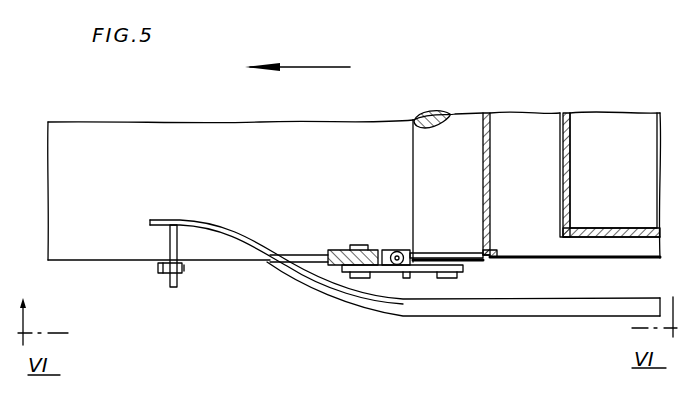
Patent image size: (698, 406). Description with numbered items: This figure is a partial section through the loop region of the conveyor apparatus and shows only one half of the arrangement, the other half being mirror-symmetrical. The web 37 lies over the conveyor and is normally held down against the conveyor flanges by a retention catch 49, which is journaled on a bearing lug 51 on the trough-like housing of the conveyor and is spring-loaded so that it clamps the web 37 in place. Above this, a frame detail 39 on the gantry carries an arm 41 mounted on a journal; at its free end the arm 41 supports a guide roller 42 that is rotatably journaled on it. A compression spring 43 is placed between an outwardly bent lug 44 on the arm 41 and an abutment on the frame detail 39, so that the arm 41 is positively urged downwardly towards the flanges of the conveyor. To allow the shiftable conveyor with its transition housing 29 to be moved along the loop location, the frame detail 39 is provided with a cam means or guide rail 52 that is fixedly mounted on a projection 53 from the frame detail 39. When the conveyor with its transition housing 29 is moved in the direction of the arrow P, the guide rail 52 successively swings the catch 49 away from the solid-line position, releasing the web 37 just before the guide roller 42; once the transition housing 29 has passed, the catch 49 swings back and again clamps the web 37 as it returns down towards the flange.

The transition housing 29 is at (567, 138).
The web 37 is at (173, 135).
The frame detail 39 is at (340, 250).
The arm 41 is at (422, 268).
The guide roller 42 is at (455, 130).
The compression spring 43 is at (405, 253).
The outwardly bent lug 44 is at (390, 250).
The retention catch 49 is at (178, 281).
The bearing lug 51 is at (160, 278).
The cam means (guide rail) 52 is at (222, 232).
The projection 53 is at (293, 257).
The arrow P is at (313, 65).